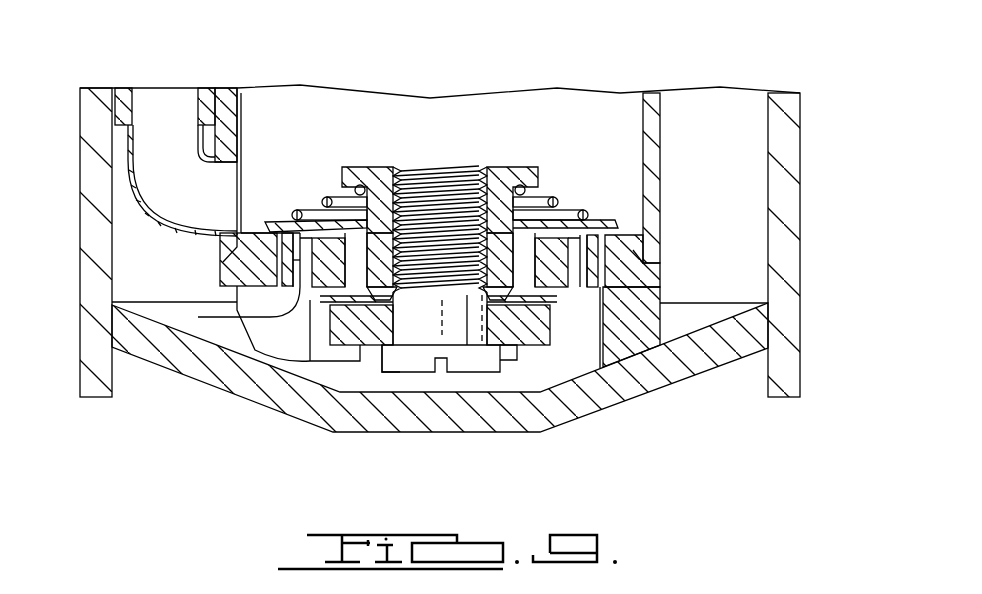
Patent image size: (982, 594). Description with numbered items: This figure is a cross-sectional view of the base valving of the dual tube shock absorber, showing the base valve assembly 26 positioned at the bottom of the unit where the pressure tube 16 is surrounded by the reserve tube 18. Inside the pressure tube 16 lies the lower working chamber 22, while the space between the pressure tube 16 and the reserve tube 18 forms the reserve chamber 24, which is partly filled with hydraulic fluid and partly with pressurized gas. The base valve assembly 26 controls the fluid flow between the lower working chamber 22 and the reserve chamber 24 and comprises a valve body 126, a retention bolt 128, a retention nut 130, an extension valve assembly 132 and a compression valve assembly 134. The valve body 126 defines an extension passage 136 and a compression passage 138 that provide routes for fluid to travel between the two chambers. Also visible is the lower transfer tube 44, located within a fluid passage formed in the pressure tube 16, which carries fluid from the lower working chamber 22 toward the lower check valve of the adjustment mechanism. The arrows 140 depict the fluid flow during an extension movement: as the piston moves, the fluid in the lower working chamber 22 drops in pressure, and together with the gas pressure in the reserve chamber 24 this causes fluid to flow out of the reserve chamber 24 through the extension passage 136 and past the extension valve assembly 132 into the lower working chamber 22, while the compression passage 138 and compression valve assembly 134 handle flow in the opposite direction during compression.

The pressure tube 16 is at (656, 126).
The reserve tube 18 is at (783, 222).
The lower working chamber 22 is at (308, 131).
The reserve chamber 24 is at (730, 206).
The base valve assembly 26 is at (547, 110).
The lower transfer tube 44 is at (150, 177).
The valve body 126 is at (632, 345).
The retention bolt 128 is at (467, 365).
The retention nut 130 is at (498, 177).
The extension valve assembly 132 is at (322, 185).
The compression valve assembly 134 is at (337, 370).
The extension passage 136 is at (283, 265).
The compression passage 138 is at (522, 272).
The arrows 140 is at (250, 213).